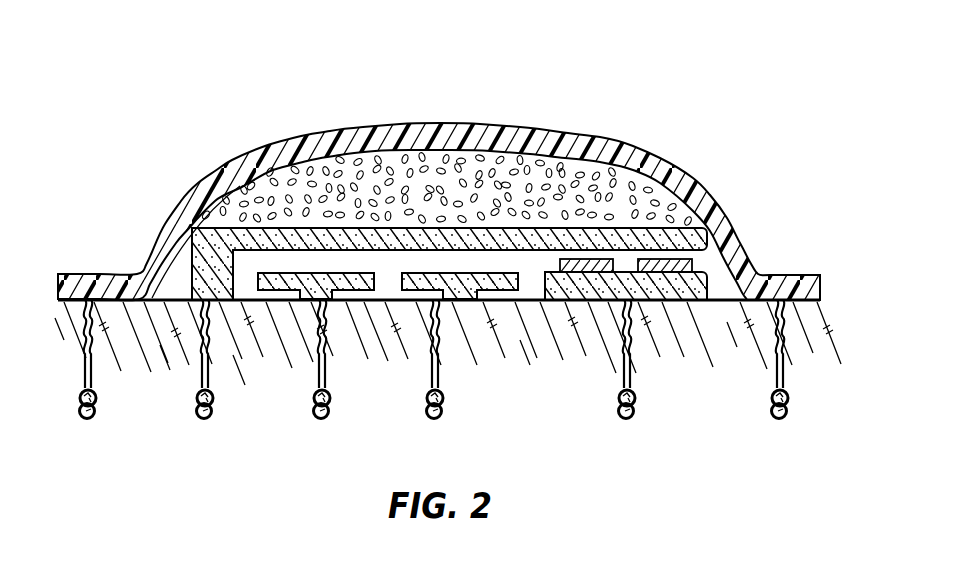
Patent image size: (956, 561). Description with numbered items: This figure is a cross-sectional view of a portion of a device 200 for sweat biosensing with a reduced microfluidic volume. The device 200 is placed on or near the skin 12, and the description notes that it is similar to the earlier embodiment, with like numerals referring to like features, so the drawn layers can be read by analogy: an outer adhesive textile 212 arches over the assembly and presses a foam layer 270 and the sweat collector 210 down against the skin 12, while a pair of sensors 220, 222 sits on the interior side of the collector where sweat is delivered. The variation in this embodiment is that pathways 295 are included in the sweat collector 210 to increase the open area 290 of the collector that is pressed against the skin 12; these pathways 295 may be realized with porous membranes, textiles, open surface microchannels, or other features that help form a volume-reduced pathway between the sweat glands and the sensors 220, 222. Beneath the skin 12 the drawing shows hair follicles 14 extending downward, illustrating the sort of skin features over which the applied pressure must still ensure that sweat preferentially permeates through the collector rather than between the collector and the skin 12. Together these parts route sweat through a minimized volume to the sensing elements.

The skin 12 is at (698, 352).
The hair follicle 14 is at (100, 410).
The device 200 is at (153, 80).
The sweat collector 210 is at (253, 237).
The cover layer 212 is at (452, 122).
The sensor 220 is at (597, 263).
The sensor 222 is at (668, 260).
The absorbent layer 270 is at (367, 180).
The open area 290 is at (527, 285).
The pathways 295 is at (407, 292).